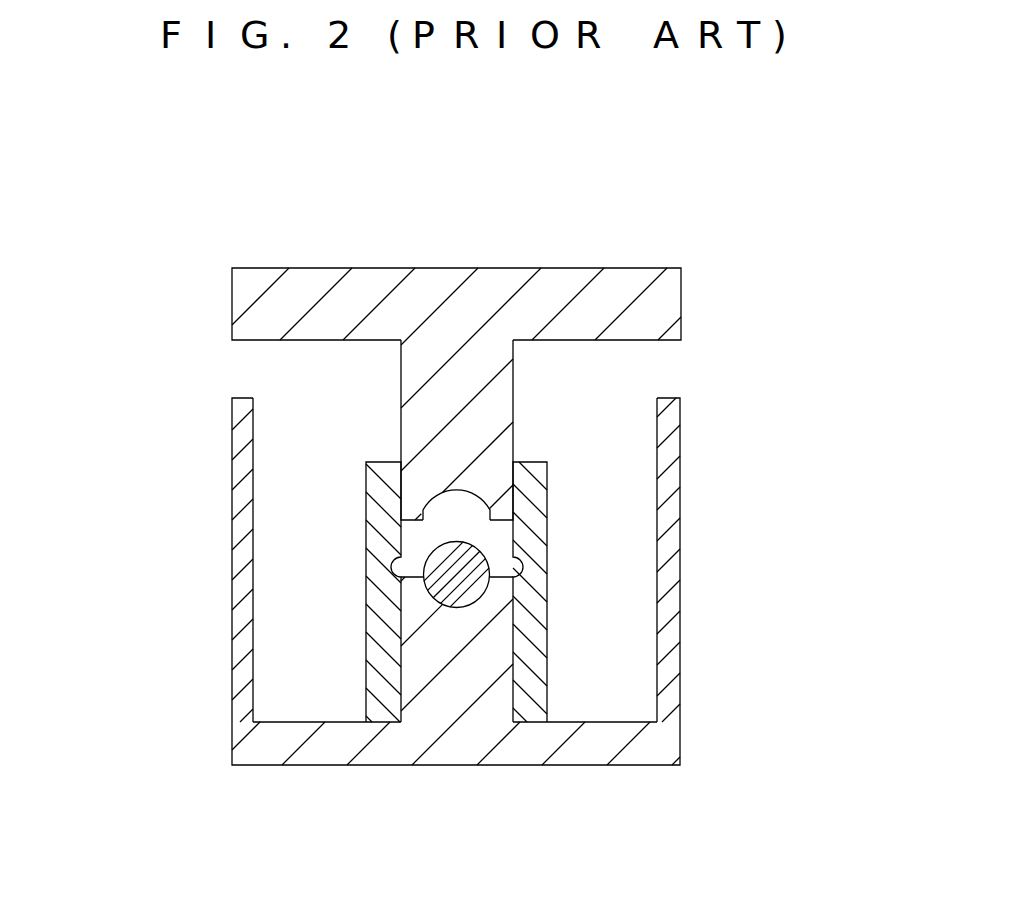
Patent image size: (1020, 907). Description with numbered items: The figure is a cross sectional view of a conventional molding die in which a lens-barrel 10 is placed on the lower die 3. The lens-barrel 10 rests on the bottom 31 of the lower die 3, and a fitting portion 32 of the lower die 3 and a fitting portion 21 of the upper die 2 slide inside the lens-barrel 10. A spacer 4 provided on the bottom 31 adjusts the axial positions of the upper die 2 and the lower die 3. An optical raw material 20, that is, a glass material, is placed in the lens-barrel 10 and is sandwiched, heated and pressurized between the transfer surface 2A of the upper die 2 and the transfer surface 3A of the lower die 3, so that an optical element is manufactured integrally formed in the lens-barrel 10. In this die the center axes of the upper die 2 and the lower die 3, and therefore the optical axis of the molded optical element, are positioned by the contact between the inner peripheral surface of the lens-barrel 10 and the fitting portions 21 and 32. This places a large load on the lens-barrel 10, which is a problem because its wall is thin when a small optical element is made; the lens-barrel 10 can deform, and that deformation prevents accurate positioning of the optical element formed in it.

The lens-barrel 10 is at (350, 498).
The upper die 2 is at (622, 290).
The fitting portion of the upper die 21 is at (473, 370).
The transfer surface of the upper die 2A is at (457, 489).
The lower die 3 is at (648, 748).
The bottom of the lower die 31 is at (596, 722).
The fitting portion of the lower die 32 is at (475, 648).
The transfer surface of the lower die 3A is at (453, 608).
The spacer 4 is at (668, 540).
The optical raw material 20 is at (452, 578).